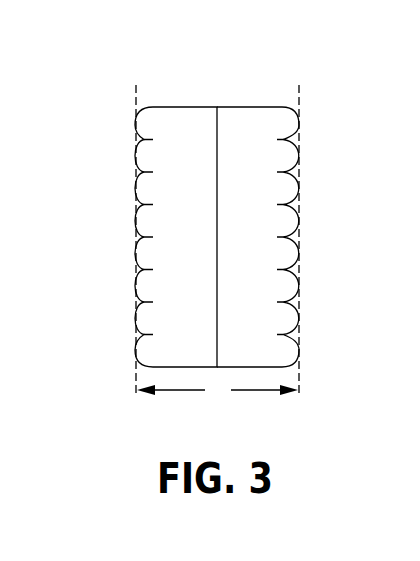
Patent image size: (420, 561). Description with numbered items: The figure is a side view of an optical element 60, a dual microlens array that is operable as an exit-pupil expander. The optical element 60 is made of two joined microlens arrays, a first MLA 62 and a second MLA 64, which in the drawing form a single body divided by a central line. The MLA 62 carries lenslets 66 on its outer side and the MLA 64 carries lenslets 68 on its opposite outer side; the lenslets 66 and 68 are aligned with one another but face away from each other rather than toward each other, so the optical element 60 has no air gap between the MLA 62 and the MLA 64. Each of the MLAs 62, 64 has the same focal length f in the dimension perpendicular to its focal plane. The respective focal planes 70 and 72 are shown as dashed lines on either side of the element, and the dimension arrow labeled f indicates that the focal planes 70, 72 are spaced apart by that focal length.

The optical element 60 is at (362, 449).
The MLA 62 is at (165, 107).
The MLA 64 is at (248, 107).
The lenslets 66 is at (141, 146).
The lenslets 68 is at (285, 204).
The focal plane 70 is at (134, 390).
The focal plane 72 is at (303, 387).